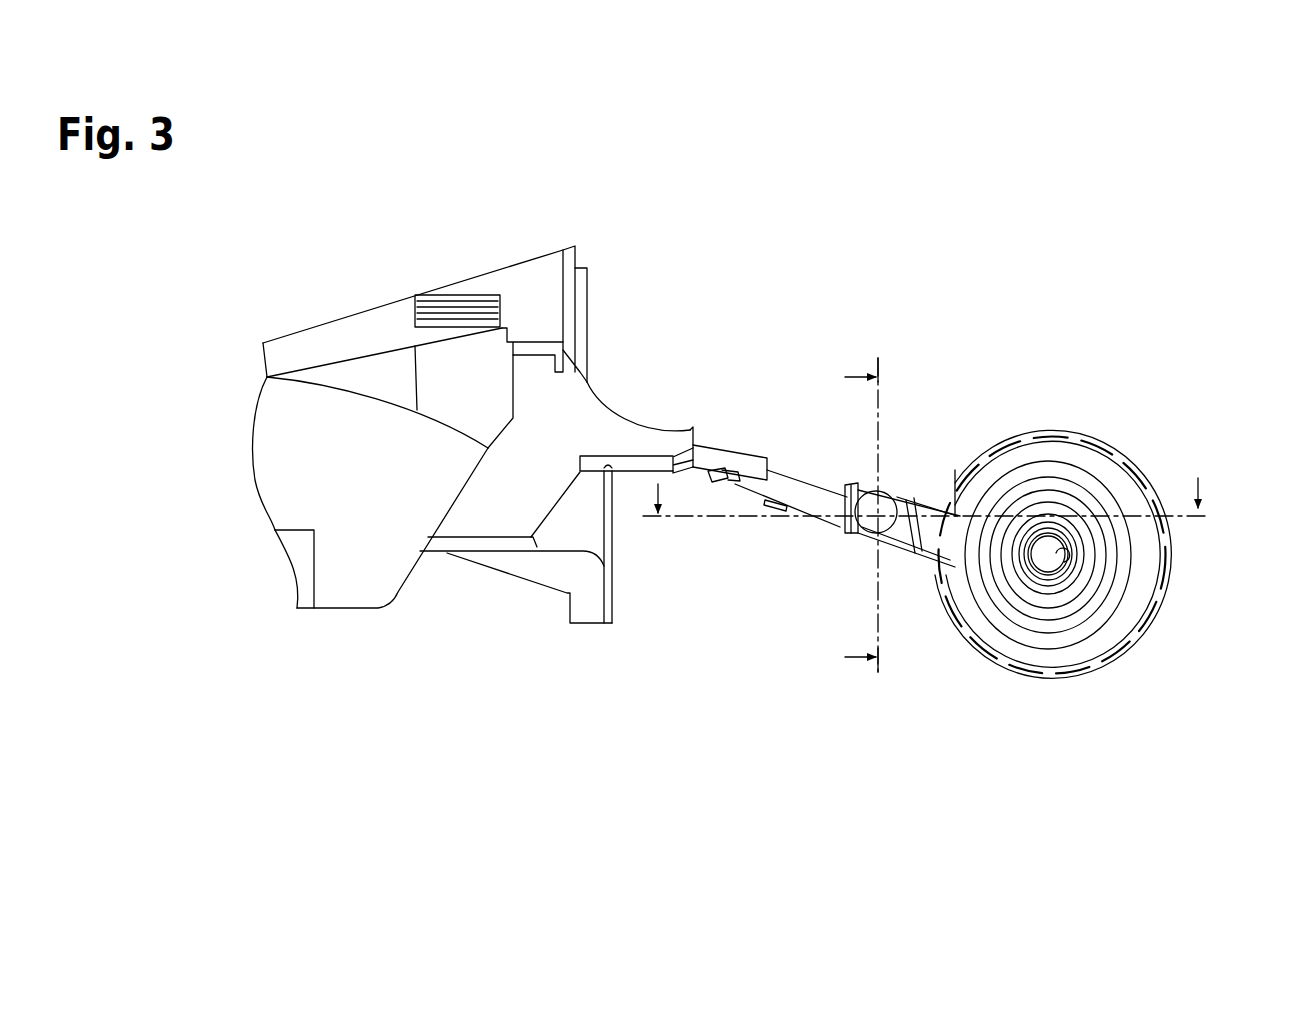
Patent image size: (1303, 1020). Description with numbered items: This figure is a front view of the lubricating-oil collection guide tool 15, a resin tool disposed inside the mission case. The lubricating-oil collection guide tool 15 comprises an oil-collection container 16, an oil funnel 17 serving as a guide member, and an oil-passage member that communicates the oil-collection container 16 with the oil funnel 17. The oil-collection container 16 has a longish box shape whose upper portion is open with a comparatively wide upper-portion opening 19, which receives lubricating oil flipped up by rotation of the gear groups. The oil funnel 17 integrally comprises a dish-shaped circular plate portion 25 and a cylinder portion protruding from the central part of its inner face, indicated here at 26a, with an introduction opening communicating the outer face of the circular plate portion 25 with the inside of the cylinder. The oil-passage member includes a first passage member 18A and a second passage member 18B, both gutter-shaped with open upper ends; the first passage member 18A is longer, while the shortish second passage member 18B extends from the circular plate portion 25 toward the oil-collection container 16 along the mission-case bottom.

The lubricating-oil collection guide tool 15 is at (858, 236).
The oil-collection container 16 is at (468, 278).
The oil funnel 17 is at (1071, 428).
The first passage member 18A is at (795, 487).
The second passage member 18B is at (925, 535).
The upper-portion opening 19 is at (357, 310).
The circular plate portion 25 is at (1080, 478).
The pin 26a is at (1063, 560).